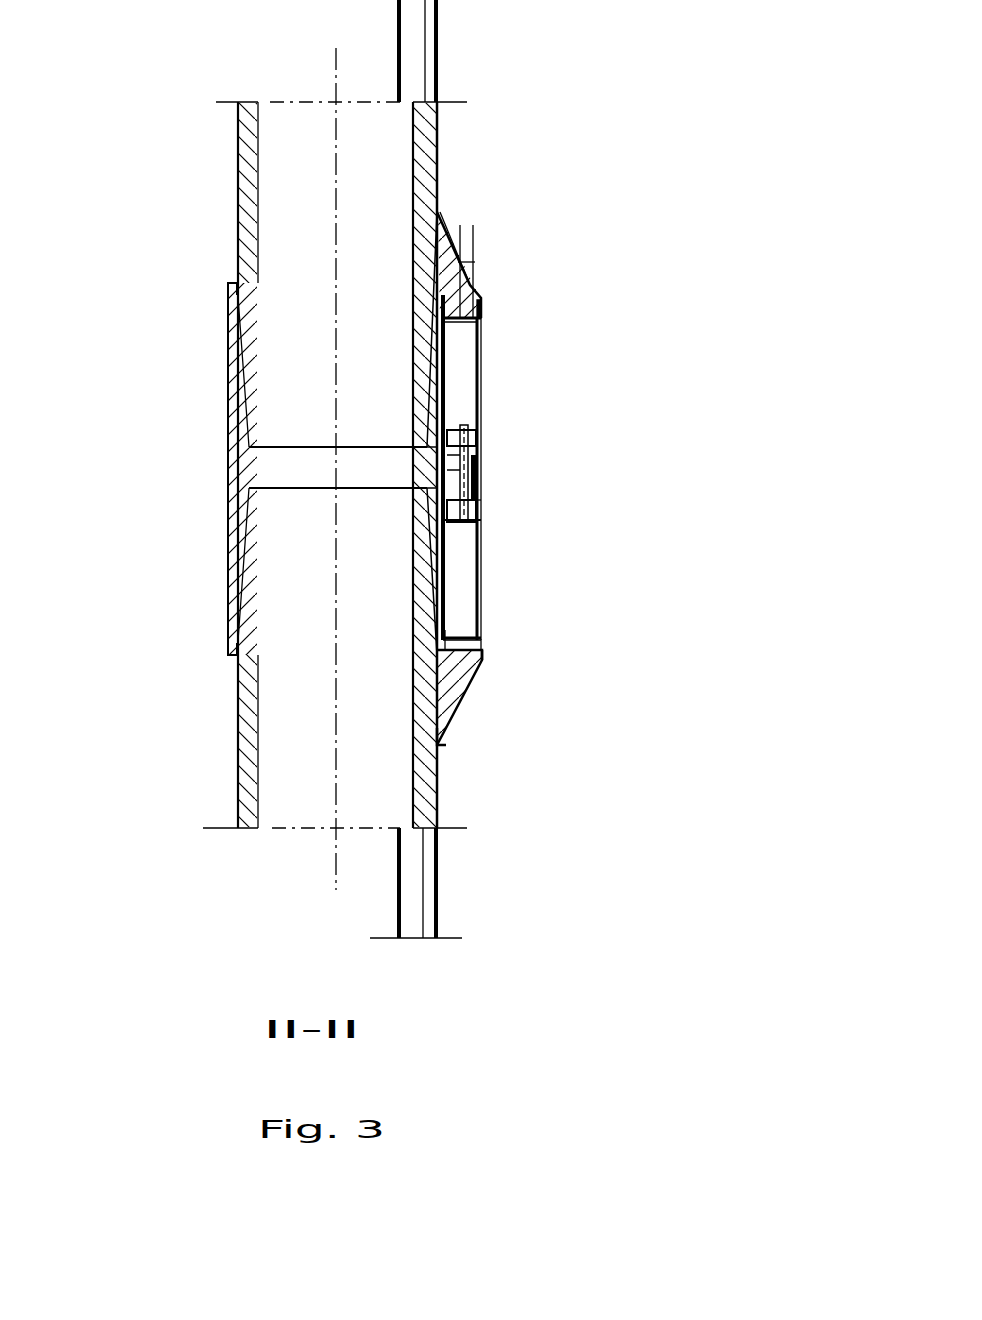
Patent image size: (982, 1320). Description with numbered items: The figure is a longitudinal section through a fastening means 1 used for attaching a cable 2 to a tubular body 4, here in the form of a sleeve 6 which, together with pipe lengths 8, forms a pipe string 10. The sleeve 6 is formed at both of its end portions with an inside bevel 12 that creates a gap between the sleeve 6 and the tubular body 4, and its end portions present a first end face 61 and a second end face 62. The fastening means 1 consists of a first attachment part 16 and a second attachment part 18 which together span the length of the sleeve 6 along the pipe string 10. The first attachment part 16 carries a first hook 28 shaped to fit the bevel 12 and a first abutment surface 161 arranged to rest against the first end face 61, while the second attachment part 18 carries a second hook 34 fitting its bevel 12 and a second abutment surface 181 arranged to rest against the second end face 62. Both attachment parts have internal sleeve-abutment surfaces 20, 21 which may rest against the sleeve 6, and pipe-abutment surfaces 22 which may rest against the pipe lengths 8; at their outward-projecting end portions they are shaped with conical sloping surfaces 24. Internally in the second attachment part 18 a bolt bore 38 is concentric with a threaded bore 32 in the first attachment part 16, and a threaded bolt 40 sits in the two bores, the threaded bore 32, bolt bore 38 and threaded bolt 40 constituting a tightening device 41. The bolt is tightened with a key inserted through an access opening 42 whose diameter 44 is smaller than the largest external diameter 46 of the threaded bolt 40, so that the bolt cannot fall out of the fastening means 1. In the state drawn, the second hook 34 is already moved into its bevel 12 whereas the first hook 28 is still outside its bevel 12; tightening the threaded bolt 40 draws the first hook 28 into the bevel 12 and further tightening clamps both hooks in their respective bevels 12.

The fastening means 1 is at (542, 422).
The cable 2 is at (423, 883).
The tubular body 4 is at (234, 473).
The sleeve 6 is at (234, 473).
The pipe length 8 is at (238, 192).
The pipe string 10 is at (200, 557).
The inside bevel 12 is at (232, 283).
The first attachment part 16 is at (480, 622).
The first abutment surface 161 is at (483, 668).
The second attachment part 18 is at (480, 312).
The second abutment surface 181 is at (460, 262).
The internal sleeve-abutment surface 20 is at (480, 648).
The internal sleeve-abutment surface 21 is at (470, 318).
The pipe-abutment surface 22 is at (446, 733).
The conical sloping surface 24 is at (438, 212).
The first hook 28 is at (483, 662).
The threaded bore 32 is at (483, 530).
The second hook 34 is at (452, 247).
The bolt bore 38 is at (472, 452).
The threaded bolt 40 is at (483, 473).
The tightening device 41 is at (540, 512).
The access opening 42 is at (470, 282).
The diameter of the access opening 44 is at (413, 227).
The largest external diameter of the threaded bolt 46 is at (412, 392).
The first end face 61 is at (230, 655).
The second end face 62 is at (228, 285).